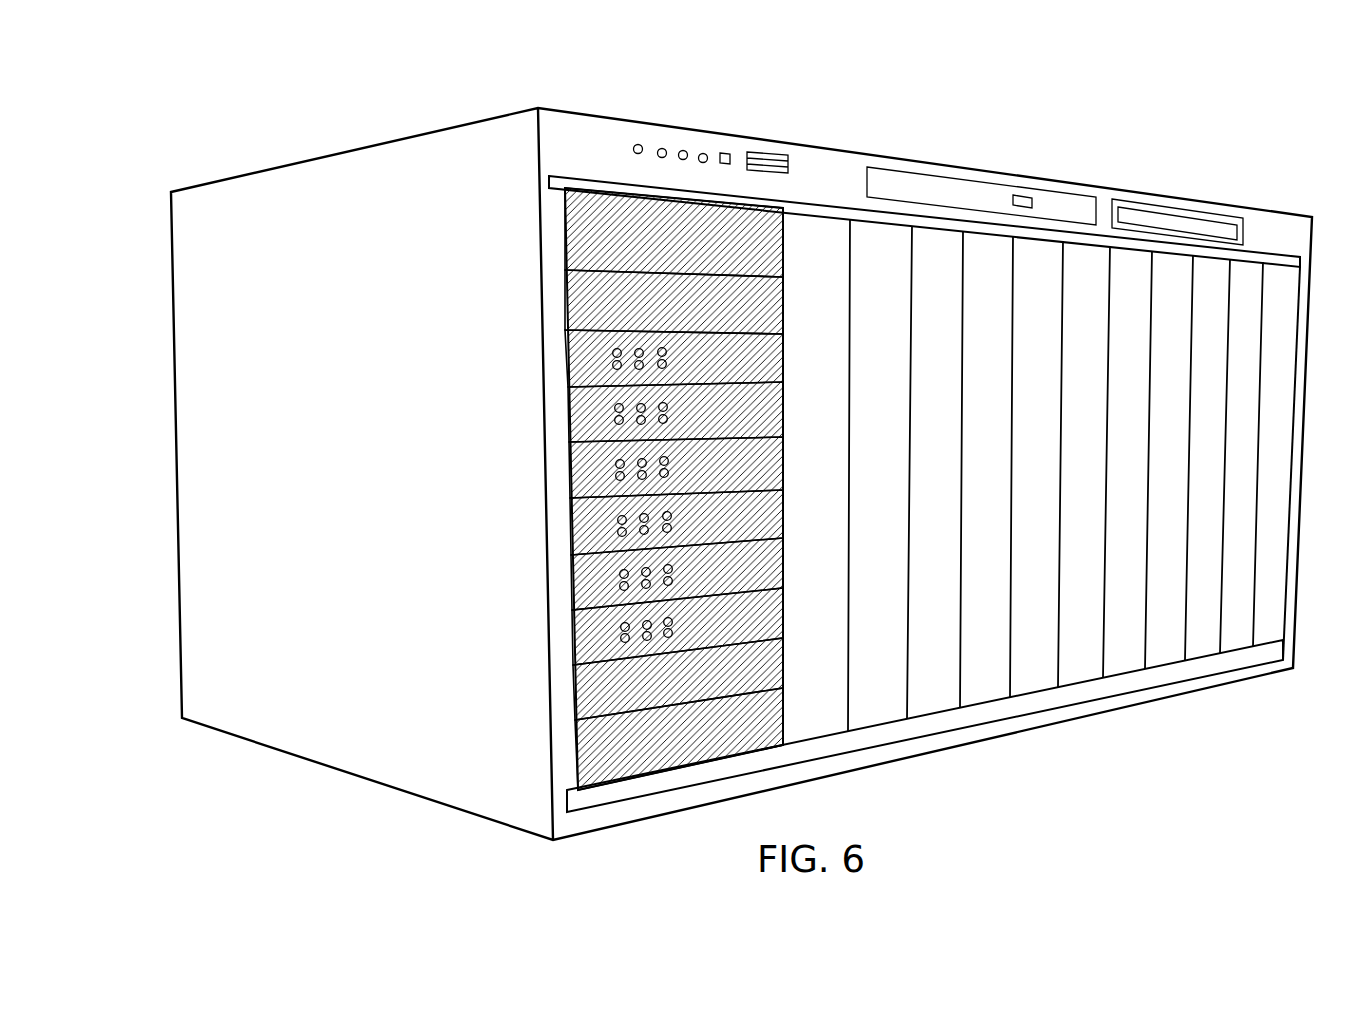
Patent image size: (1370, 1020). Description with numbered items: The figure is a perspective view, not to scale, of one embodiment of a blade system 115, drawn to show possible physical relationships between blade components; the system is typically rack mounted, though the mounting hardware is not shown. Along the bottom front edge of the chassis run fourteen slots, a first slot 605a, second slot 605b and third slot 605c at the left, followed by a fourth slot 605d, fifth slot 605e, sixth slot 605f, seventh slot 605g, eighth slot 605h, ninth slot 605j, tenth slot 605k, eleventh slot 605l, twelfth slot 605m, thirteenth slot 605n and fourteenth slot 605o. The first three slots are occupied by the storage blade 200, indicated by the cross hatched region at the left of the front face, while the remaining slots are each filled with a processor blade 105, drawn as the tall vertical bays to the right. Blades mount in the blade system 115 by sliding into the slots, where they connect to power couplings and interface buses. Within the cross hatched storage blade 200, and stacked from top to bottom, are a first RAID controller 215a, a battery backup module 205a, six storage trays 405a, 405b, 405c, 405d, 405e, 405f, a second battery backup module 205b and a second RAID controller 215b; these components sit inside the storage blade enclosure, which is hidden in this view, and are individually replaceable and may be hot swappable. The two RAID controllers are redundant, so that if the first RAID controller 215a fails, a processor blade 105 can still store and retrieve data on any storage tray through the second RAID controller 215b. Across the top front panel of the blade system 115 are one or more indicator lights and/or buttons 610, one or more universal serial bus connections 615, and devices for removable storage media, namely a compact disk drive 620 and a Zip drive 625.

The blade system 115 is at (443, 93).
The storage blade 200 is at (608, 242).
The processor blade 105 is at (1227, 353).
The first RAID controller 215a is at (566, 233).
The battery backup module 205a is at (566, 293).
The storage tray 405a is at (568, 369).
The storage tray 405b is at (569, 426).
The storage tray 405c is at (570, 482).
The storage tray 405d is at (571, 537).
The storage tray 405e is at (572, 593).
The storage tray 405f is at (573, 649).
The battery backup module 205b is at (574, 698).
The second RAID controller 215b is at (575, 753).
The indicator lights and/or buttons 610 is at (637, 145).
The universal serial bus connections 615 is at (768, 150).
The compact disk drive 620 is at (998, 183).
The Zip drive 625 is at (1185, 210).
The first slot 605a is at (624, 836).
The second slot 605b is at (710, 822).
The third slot 605c is at (770, 810).
The fourth slot 605d is at (838, 793).
The fifth slot 605e is at (898, 784).
The sixth slot 605f is at (958, 770).
The seventh slot 605g is at (1005, 806).
The eighth slot 605h is at (1050, 752).
The ninth slot 605j is at (1100, 782).
The tenth slot 605k is at (1142, 730).
The eleventh slot 605l is at (1188, 766).
The twelfth slot 605m is at (1223, 715).
The thirteenth slot 605n is at (1262, 750).
The fourteenth slot 605o is at (1298, 700).